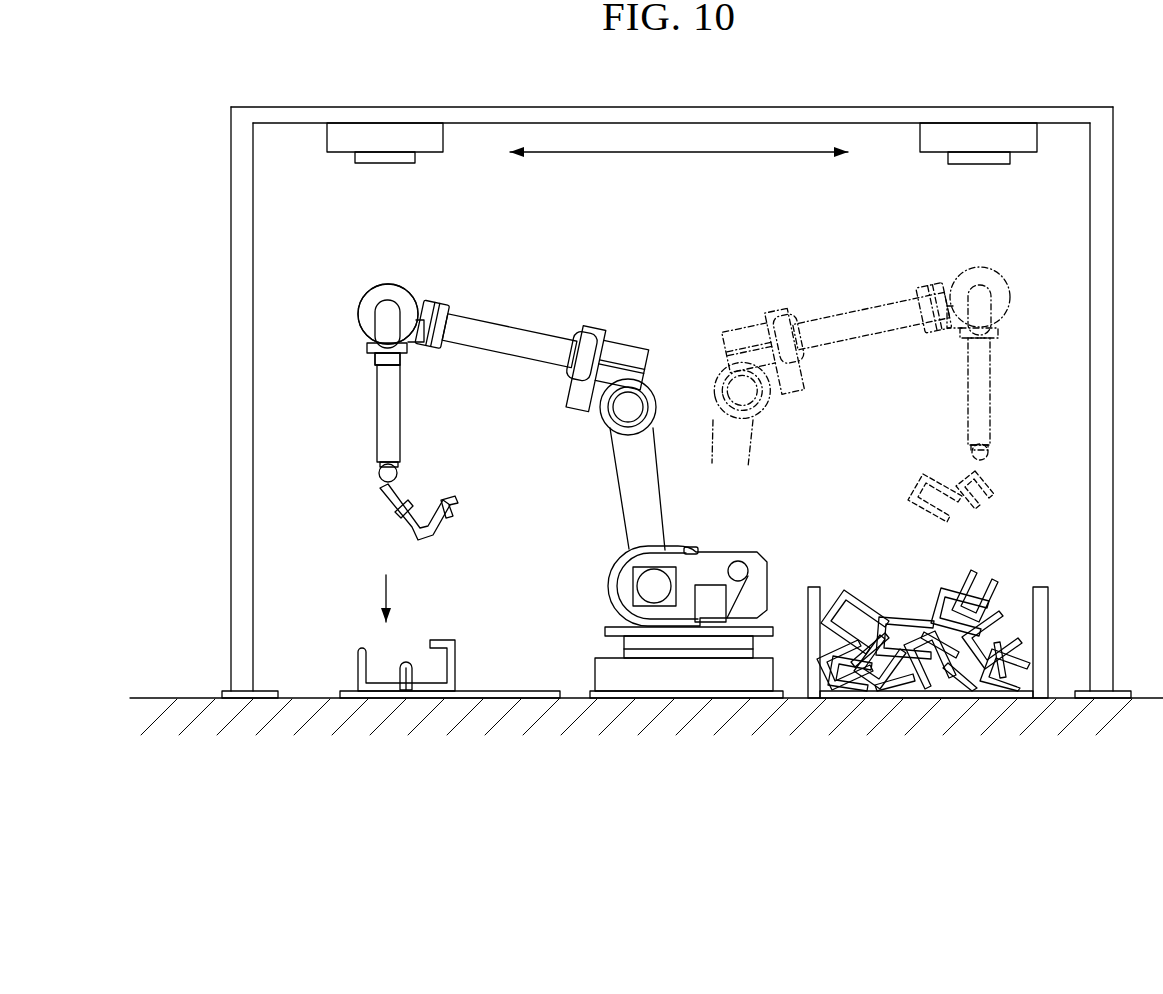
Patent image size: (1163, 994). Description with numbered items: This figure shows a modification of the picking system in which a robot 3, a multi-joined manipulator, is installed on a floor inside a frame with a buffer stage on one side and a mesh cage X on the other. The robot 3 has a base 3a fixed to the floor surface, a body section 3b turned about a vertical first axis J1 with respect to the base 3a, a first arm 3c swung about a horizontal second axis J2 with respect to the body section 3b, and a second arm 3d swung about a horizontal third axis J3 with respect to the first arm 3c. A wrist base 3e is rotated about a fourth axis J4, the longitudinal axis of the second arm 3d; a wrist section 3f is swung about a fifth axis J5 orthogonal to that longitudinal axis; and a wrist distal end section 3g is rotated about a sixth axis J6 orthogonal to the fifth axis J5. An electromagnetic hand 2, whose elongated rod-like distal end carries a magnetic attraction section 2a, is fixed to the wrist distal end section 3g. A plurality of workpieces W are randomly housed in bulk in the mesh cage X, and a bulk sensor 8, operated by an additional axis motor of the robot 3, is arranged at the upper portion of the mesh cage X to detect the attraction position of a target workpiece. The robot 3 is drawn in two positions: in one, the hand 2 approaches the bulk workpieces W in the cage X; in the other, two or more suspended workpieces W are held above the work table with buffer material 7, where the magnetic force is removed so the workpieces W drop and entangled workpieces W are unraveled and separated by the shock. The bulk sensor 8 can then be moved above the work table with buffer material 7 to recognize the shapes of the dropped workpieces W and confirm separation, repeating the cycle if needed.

The electromagnetic hand 2 is at (402, 422).
The magnetic attraction section 2a is at (379, 472).
The robot 3 is at (633, 320).
The base 3a is at (690, 703).
The body section 3b is at (700, 553).
The first arm 3c is at (616, 482).
The second arm 3d is at (510, 333).
The wrist base 3e is at (422, 299).
The wrist section 3f is at (376, 320).
The wrist distal end section 3g is at (371, 349).
The work table with buffer material 7 is at (528, 690).
The bulk sensor 8 is at (343, 165).
The first axis J1 is at (763, 627).
The second axis J2 is at (630, 583).
The third axis J3 is at (601, 419).
The fourth axis J4 is at (454, 298).
The fifth axis J5 is at (370, 306).
The sixth axis J6 is at (418, 364).
The workpiece W is at (380, 490).
The mesh cage X is at (1050, 632).